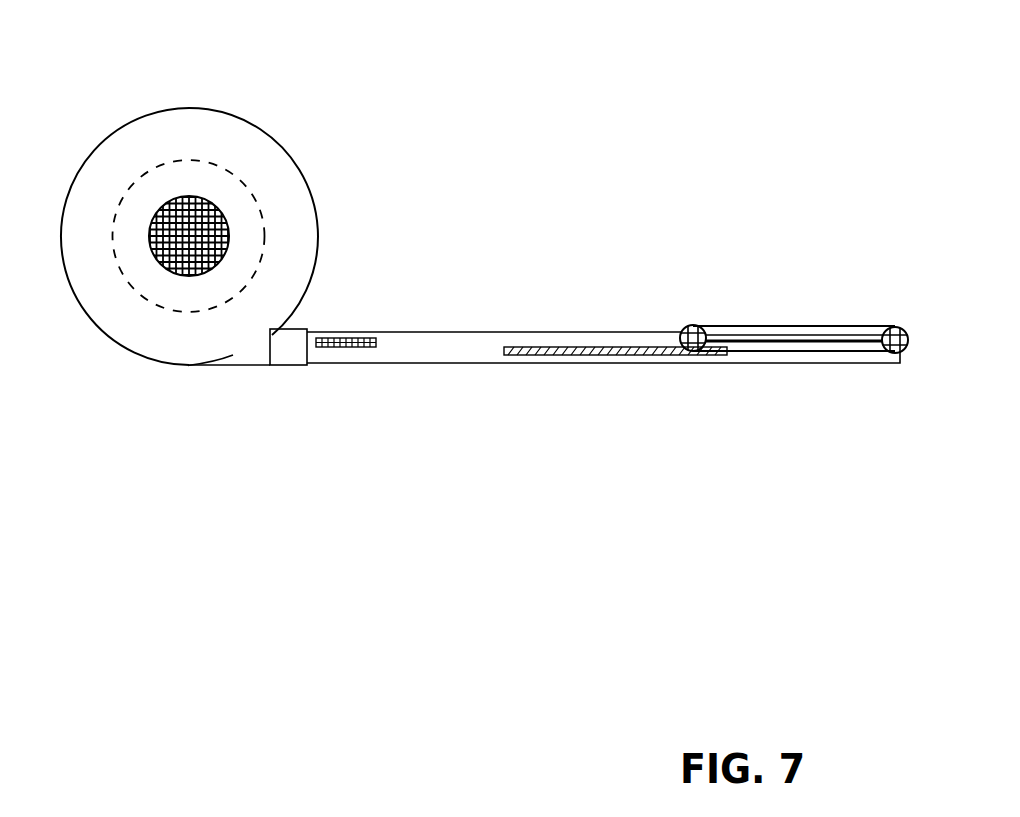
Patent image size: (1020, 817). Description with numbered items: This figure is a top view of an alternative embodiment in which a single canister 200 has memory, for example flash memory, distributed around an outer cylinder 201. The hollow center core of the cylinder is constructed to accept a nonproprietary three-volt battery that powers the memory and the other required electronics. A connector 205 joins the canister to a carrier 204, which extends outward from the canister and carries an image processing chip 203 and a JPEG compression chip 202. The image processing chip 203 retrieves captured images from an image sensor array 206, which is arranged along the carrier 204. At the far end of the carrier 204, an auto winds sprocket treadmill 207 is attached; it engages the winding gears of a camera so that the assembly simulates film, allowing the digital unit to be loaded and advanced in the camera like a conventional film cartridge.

The canister 200 is at (247, 120).
The outer cylinder 201 is at (114, 329).
The JPEG compression chip 202 is at (166, 156).
The image processing chip 203 is at (354, 324).
The carrier 204 is at (612, 264).
The connector 205 is at (262, 367).
The image sensor array 206 is at (602, 374).
The auto winds sprocket treadmill 207 is at (754, 314).